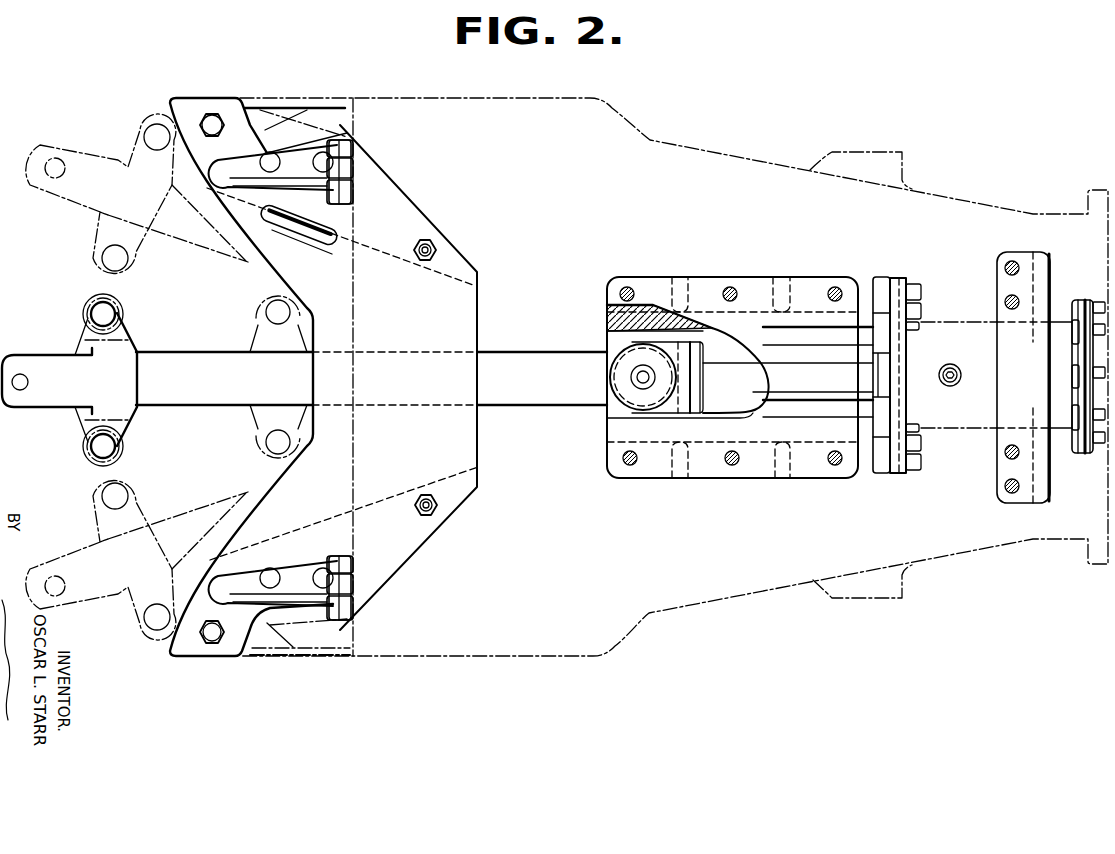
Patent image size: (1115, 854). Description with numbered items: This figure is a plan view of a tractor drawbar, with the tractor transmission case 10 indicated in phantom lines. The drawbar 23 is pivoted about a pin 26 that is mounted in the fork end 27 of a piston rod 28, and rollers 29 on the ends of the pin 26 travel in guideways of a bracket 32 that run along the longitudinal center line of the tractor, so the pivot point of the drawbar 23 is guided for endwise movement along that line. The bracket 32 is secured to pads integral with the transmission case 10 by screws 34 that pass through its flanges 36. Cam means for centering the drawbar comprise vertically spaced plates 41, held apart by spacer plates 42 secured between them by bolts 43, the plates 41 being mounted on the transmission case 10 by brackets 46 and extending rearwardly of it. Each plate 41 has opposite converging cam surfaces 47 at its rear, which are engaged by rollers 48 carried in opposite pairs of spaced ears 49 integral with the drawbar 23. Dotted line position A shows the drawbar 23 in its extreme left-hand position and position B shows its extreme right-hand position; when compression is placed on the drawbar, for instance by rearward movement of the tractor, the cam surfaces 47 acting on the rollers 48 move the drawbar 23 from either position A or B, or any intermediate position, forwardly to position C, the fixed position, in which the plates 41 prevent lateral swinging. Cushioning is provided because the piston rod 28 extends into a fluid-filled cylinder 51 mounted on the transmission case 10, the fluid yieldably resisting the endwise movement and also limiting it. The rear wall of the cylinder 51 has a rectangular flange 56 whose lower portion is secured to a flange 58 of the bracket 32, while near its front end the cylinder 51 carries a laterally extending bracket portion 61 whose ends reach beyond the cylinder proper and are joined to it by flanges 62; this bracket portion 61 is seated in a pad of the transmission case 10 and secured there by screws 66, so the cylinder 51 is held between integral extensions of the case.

The transmission case 10 is at (650, 142).
The drawbar 23 is at (513, 390).
The pin 26 is at (636, 372).
The fork end 27 is at (702, 404).
The piston rod 28 is at (754, 385).
The rollers 29 is at (633, 384).
The bracket 32 is at (707, 288).
The screws 34 is at (827, 290).
The flanges 36 is at (656, 278).
The plates 41 is at (405, 210).
The plates 42 is at (340, 223).
The bolts 43 is at (212, 114).
The brackets 46 is at (294, 172).
The cam surfaces 47 is at (250, 257).
The rollers 48 is at (117, 304).
The ears 49 is at (128, 328).
The cylinder 51 is at (943, 420).
The rectangular flange 56 is at (900, 279).
The flange 58 is at (883, 474).
The bracket portion 61 is at (1003, 357).
The flanges 62 is at (1042, 253).
The screws 66 is at (1005, 268).
The dotted line position A is at (86, 166).
The position B is at (82, 566).
The position C is at (268, 423).